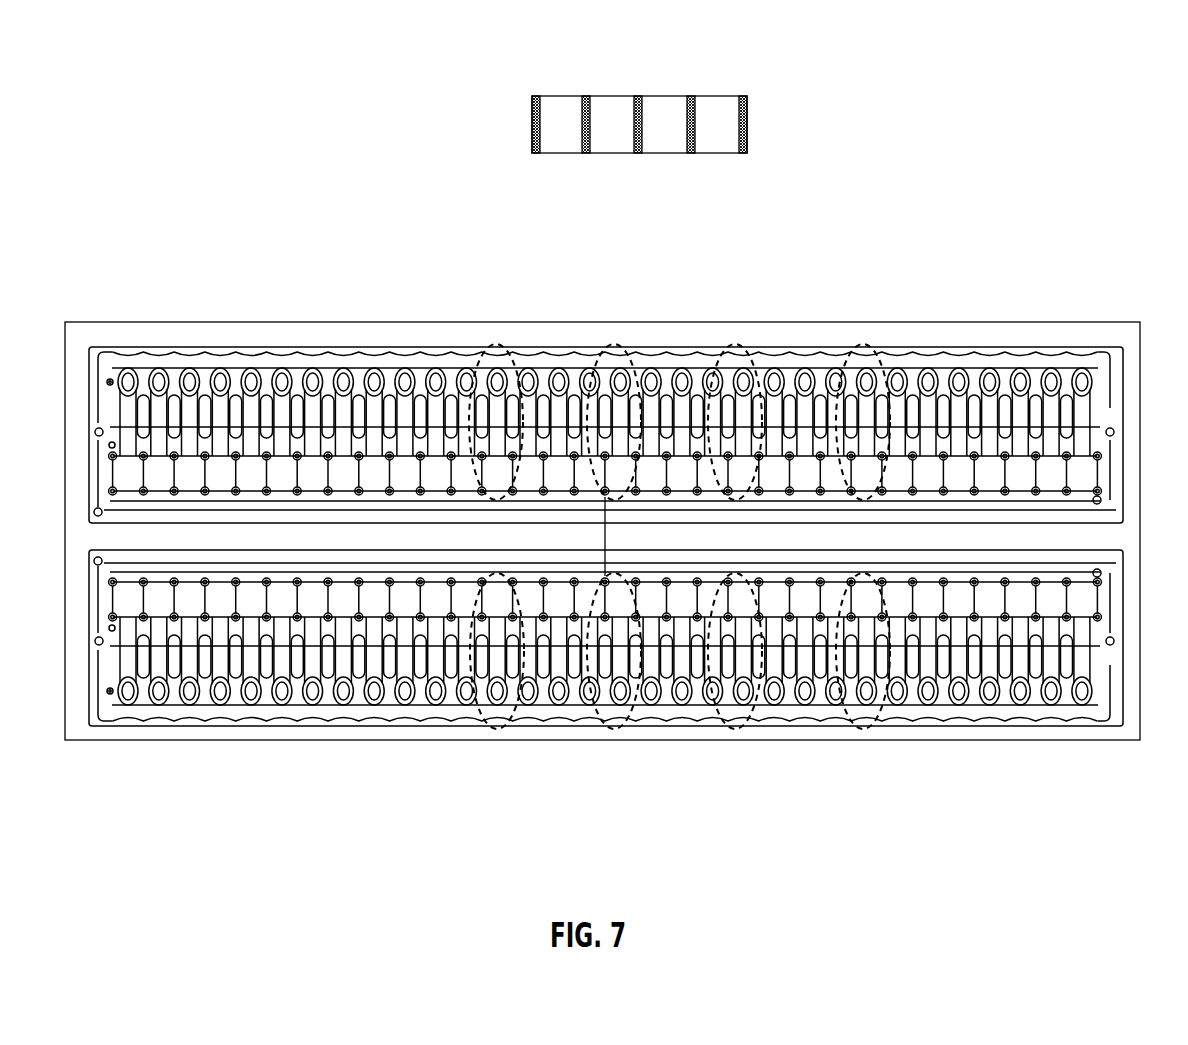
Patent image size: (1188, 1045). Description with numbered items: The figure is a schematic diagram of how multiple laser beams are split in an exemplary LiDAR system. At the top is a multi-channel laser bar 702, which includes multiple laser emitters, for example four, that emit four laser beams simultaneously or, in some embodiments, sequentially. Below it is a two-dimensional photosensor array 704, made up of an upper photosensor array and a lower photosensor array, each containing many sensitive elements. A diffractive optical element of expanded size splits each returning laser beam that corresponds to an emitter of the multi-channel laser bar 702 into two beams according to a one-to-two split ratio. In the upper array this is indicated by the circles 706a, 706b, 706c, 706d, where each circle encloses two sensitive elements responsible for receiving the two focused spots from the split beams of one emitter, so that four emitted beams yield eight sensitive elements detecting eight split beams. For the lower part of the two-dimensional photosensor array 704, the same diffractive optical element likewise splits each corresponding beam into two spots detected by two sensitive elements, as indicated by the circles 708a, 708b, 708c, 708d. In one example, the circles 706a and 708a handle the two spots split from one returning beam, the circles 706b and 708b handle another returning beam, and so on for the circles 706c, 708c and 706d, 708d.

The multi-channel laser bar 702 is at (607, 96).
The two-dimensional photosensor array 704 is at (259, 322).
The circle 706a is at (492, 343).
The circle 706b is at (608, 343).
The circle 706c is at (728, 343).
The circle 706d is at (856, 343).
The circle 708a is at (494, 741).
The circle 708b is at (612, 741).
The circle 708c is at (733, 741).
The circle 708d is at (855, 741).